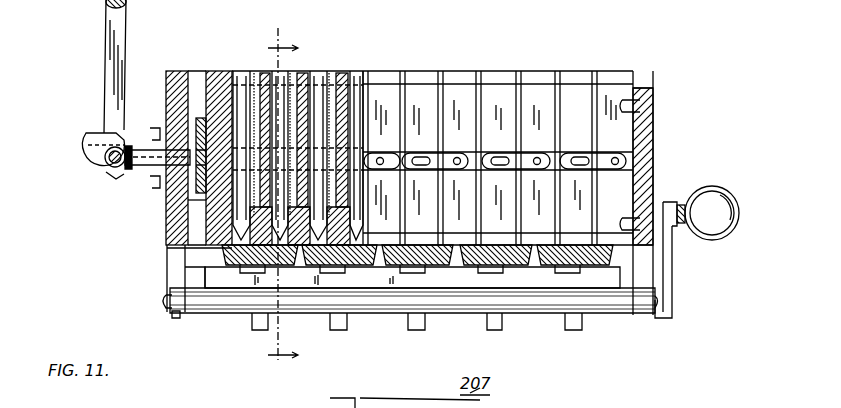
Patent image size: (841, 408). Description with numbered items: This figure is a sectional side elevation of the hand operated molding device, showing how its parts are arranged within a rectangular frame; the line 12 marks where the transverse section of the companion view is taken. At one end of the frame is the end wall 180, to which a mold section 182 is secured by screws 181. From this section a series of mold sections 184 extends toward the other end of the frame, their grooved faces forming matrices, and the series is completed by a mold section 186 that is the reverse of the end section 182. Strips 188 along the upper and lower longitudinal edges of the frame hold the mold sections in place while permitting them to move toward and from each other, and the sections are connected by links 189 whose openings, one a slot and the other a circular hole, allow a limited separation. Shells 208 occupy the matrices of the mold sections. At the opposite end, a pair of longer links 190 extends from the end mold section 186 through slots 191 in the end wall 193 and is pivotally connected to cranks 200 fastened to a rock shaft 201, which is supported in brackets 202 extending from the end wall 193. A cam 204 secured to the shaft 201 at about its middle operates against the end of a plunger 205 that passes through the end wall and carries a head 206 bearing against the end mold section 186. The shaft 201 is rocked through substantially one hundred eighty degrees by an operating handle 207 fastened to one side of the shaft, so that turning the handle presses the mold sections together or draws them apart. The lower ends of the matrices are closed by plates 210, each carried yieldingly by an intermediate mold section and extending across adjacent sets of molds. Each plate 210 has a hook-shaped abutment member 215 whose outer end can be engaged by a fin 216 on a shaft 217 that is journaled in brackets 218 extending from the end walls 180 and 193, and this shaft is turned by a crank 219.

The section line 12 is at (283, 202).
The end wall 180 is at (655, 180).
The screws 181 is at (640, 108).
The mold section 182 is at (615, 95).
The mold sections 184 is at (395, 86).
The mold section 186 is at (228, 62).
The strips 188 is at (597, 75).
The links 189 is at (562, 158).
The links 190 is at (200, 185).
The slots 191 is at (178, 112).
The end wall 193 is at (172, 252).
The cranks 200 is at (92, 143).
The rock shaft 201 is at (109, 161).
The brackets 202 is at (150, 180).
The cam 204 is at (103, 174).
The plunger 205 is at (142, 148).
The head 206 is at (180, 215).
The operating handle 207 is at (128, 5).
The shells 208 is at (320, 72).
The plates 210 is at (363, 266).
The hook-shaped abutment member 215 is at (575, 345).
The fin 216 is at (412, 279).
The shaft 217 is at (470, 310).
The brackets 218 is at (176, 316).
The crank 219 is at (668, 275).